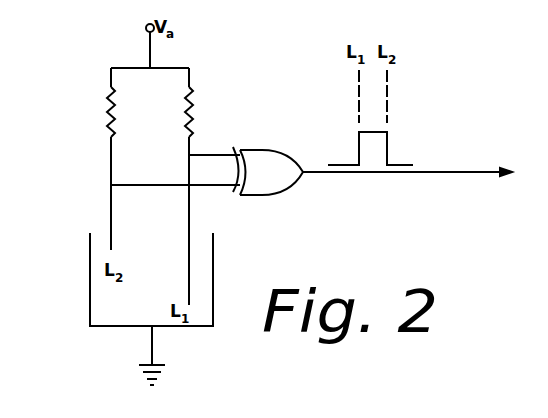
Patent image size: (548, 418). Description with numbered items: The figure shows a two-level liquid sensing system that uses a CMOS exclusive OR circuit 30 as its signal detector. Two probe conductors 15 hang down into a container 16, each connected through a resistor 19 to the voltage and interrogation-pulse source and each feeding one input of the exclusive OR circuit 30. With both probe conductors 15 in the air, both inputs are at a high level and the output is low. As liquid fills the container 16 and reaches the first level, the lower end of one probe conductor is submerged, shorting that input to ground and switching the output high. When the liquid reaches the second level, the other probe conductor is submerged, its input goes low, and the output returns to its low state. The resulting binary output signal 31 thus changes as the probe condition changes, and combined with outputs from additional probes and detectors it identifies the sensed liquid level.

The resistors 19 is at (108, 115).
The probe conductors 15 is at (110, 205).
The container 16 is at (90, 277).
The exclusive OR circuit 30 is at (279, 149).
The binary output signal 31 is at (389, 141).